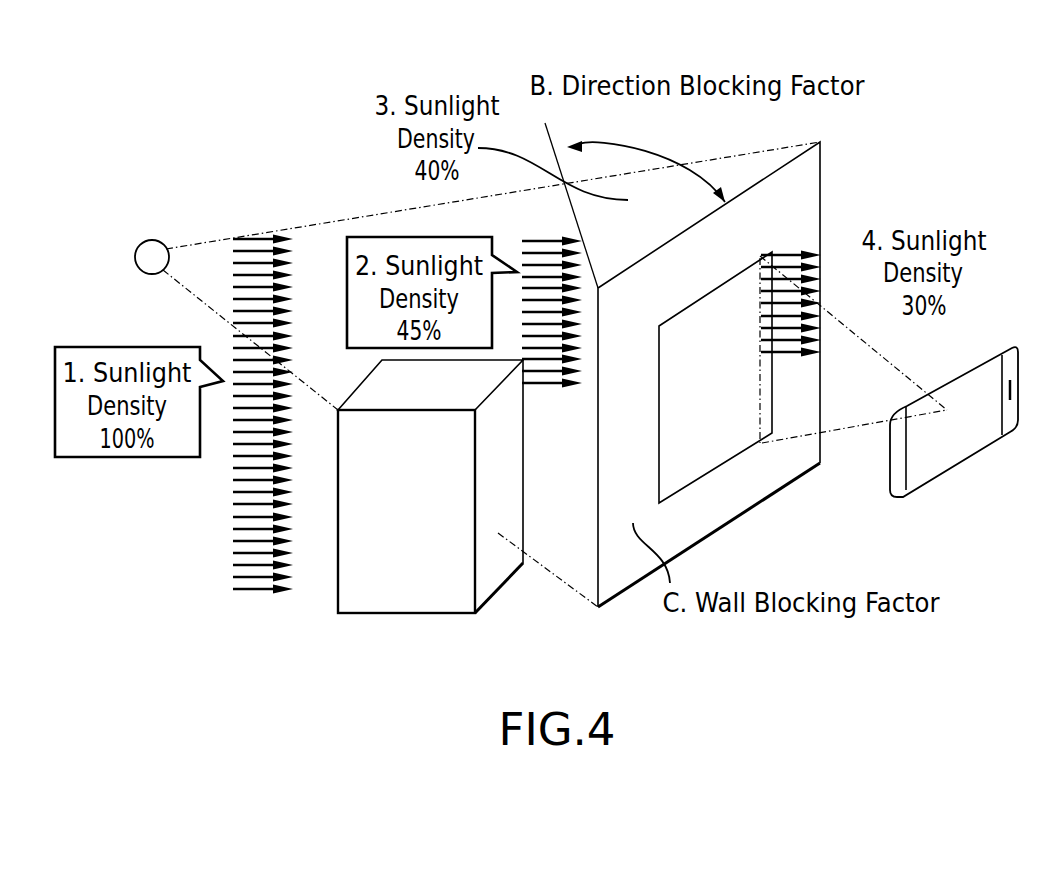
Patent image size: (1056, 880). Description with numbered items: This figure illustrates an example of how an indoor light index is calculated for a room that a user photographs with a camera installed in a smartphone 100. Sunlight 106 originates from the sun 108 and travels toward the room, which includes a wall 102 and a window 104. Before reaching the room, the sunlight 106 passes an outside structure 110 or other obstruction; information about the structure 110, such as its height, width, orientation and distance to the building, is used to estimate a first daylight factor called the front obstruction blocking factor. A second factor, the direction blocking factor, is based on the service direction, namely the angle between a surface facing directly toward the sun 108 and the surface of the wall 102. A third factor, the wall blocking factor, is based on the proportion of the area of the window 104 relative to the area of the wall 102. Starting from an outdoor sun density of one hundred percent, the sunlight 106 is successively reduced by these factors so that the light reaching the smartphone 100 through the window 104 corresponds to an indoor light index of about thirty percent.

The smartphone 100 is at (975, 455).
The wall 102 is at (822, 182).
The window 104 is at (687, 488).
The sunlight 106 is at (250, 591).
The sun 108 is at (152, 240).
The structure 110 is at (407, 615).